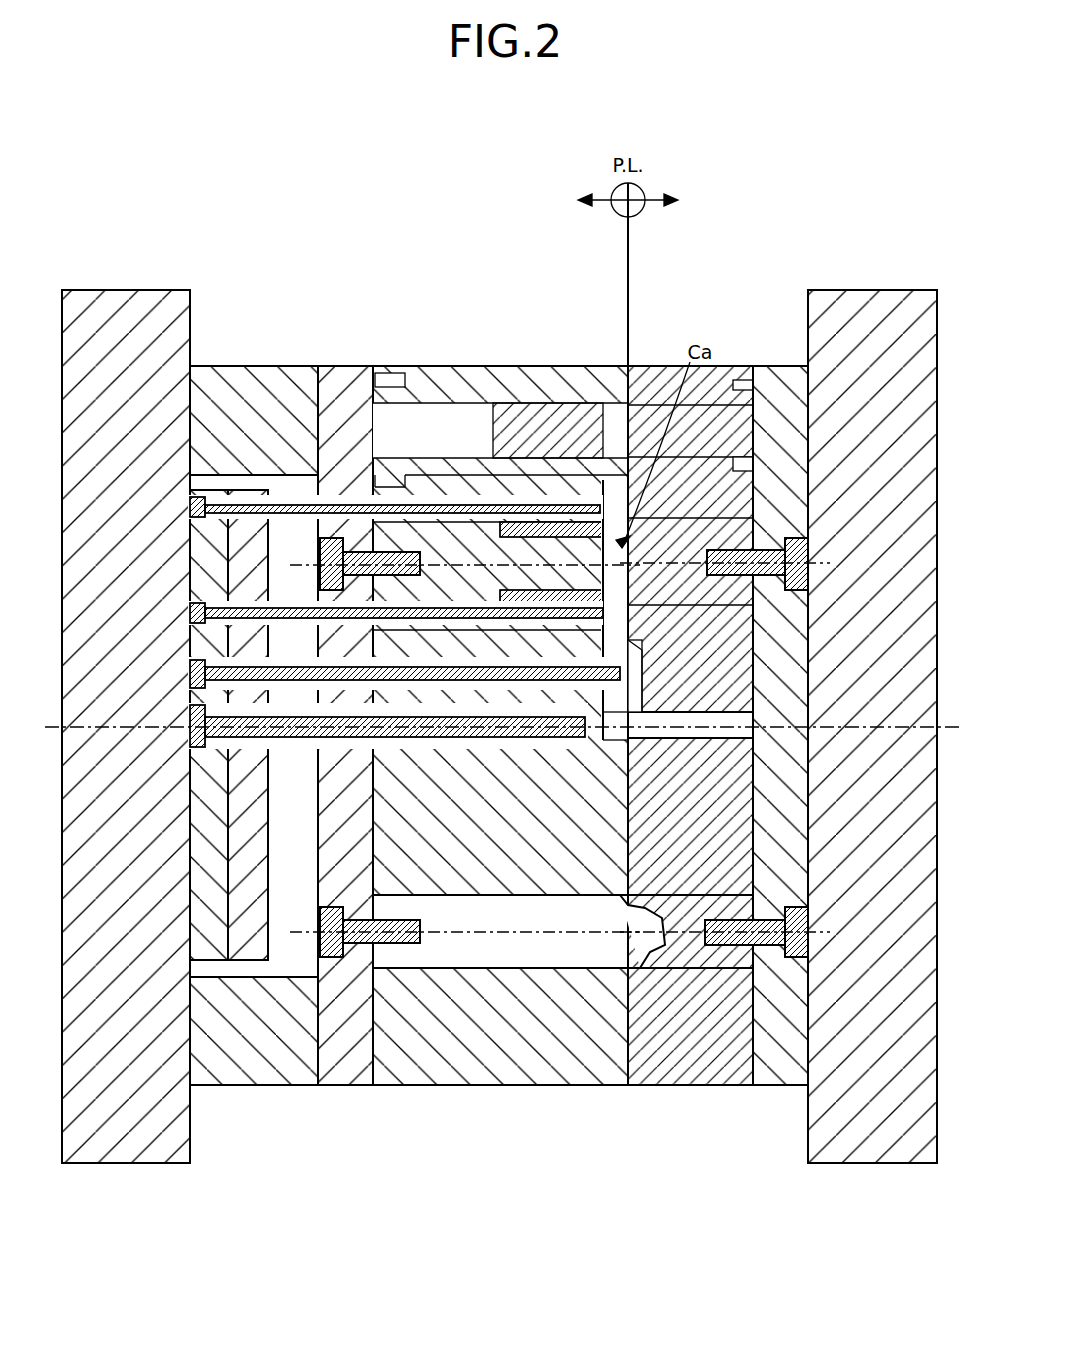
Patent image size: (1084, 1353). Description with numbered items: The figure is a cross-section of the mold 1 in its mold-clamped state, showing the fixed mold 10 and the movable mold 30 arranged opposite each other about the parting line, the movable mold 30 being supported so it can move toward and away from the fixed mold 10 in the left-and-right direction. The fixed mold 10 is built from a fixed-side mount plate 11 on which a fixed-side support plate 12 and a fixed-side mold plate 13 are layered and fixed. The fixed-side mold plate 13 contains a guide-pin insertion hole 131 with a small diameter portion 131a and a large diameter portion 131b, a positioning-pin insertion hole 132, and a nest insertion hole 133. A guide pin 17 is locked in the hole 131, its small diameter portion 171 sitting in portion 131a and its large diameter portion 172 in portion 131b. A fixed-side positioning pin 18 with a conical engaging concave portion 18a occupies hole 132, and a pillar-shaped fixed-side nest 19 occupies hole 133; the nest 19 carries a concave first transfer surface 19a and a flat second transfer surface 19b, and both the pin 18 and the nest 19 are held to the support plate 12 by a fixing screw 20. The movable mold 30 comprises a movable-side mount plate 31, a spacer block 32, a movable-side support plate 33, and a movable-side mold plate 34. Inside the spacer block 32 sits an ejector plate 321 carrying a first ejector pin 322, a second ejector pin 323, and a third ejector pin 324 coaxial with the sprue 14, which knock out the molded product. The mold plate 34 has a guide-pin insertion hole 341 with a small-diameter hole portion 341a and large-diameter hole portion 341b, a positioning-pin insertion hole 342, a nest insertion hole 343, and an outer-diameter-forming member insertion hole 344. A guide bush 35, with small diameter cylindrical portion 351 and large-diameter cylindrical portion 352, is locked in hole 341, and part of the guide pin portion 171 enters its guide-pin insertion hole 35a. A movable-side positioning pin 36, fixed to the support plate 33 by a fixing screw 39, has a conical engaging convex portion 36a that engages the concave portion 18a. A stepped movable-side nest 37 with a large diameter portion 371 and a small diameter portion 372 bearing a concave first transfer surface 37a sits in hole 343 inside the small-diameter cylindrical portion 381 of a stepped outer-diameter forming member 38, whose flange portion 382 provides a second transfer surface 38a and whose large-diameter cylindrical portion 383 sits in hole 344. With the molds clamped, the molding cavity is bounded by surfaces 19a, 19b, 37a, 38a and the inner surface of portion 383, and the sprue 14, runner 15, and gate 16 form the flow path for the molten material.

The mold 1 is at (45, 136).
The fixed mold 10 is at (633, 240).
The fixed-side mount plate 11 is at (880, 1165).
The fixed-side support plate 12 is at (770, 1087).
The fixed-side mold plate 13 is at (745, 1087).
The guide-pin insertion hole 131 is at (742, 270).
The small diameter portion 131a is at (745, 385).
The large diameter portion 131b is at (755, 465).
The positioning-pin insertion hole 132 is at (733, 972).
The nest insertion hole 133 is at (765, 610).
The sprue 14 is at (600, 738).
The runner 15 is at (660, 745).
The gate 16 is at (640, 720).
The guide pin 17 is at (687, 312).
The small diameter portion 171 is at (700, 400).
The large diameter portion 172 is at (742, 400).
The fixed-side positioning pin 18 is at (690, 972).
The engaging concave portion 18a is at (660, 925).
The fixed-side nest 19 is at (760, 595).
The first transfer surface 19a is at (640, 530).
The second transfer surface 19b is at (655, 640).
The fixing screw 20 is at (800, 555).
The movable mold 30 is at (45, 240).
The movable-side mount plate 31 is at (140, 1165).
The spacer block 32 is at (205, 1087).
The ejector plate 321 is at (250, 1090).
The first ejector pin 322 is at (190, 640).
The second ejector pin 323 is at (185, 700).
The third ejector pin 324 is at (180, 745).
The movable-side support plate 33 is at (345, 1087).
The movable-side mold plate 34 is at (490, 1087).
The guide-pin insertion hole 341 is at (325, 286).
The small-diameter hole portion 341a is at (335, 555).
The large-diameter hole portion 341b is at (300, 560).
The positioning-pin insertion hole 342 is at (530, 972).
The nest insertion hole 343 is at (452, 520).
The outer-diameter-forming member insertion hole 344 is at (612, 620).
The guide bush 35 is at (333, 286).
The guide-pin insertion hole 35a is at (383, 380).
The small diameter cylindrical portion 351 is at (400, 470).
The large-diameter cylindrical portion 352 is at (378, 500).
The movable-side positioning pin 36 is at (600, 972).
The engaging convex portion 36a is at (628, 972).
The movable-side nest 37 is at (505, 286).
The first transfer surface 37a is at (556, 530).
The large diameter portion 371 is at (475, 600).
The small diameter portion 372 is at (505, 595).
The outer-diameter forming member 38 is at (620, 276).
The second transfer surface 38a is at (607, 590).
The small-diameter cylindrical portion 381 is at (540, 560).
The flange portion 382 is at (577, 560).
The large-diameter cylindrical portion 383 is at (598, 560).
The fixing screw 39 is at (330, 590).